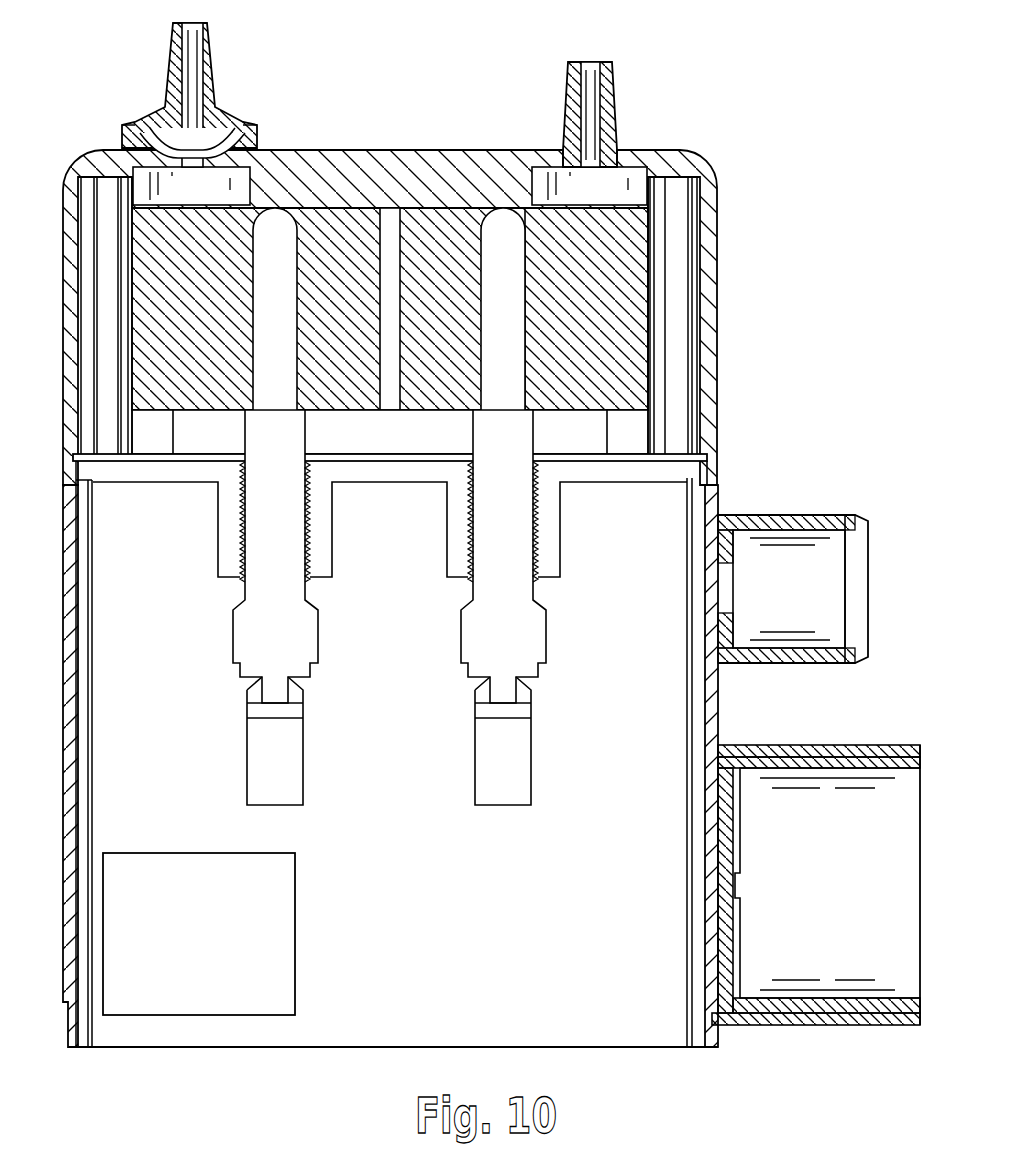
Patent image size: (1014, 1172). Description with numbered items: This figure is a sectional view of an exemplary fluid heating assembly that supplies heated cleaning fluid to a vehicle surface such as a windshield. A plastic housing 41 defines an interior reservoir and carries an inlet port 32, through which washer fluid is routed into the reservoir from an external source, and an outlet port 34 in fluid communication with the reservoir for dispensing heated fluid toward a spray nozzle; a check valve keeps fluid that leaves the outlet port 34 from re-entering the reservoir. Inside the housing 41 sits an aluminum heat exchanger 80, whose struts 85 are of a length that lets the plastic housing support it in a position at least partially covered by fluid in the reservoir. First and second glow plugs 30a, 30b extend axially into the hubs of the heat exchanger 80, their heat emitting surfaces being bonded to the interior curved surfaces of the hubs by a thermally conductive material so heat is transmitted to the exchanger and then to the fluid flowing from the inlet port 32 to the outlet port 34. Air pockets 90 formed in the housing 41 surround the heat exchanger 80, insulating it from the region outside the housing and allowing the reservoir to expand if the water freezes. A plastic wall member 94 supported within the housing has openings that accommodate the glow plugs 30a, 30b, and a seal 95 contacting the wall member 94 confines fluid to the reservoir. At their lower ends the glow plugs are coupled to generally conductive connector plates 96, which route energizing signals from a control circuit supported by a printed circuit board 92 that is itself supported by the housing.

The outlet port 34 is at (172, 47).
The inlet port 32 is at (613, 99).
The housing 41 is at (708, 350).
The heat exchanger 80 is at (440, 293).
The struts 85 is at (603, 352).
The air pockets 90 is at (673, 405).
The wall member 94 is at (612, 477).
The seal 95 is at (390, 455).
The first glow plug 30a is at (277, 303).
The second glow plug 30b is at (510, 335).
The connector plates 96 is at (513, 775).
The printed circuit board 92 is at (408, 960).